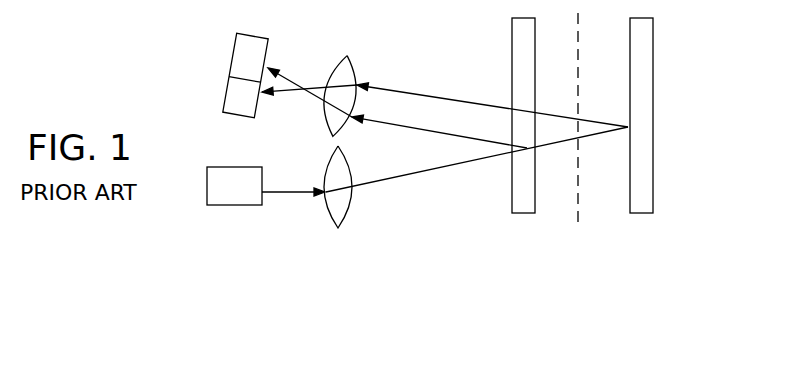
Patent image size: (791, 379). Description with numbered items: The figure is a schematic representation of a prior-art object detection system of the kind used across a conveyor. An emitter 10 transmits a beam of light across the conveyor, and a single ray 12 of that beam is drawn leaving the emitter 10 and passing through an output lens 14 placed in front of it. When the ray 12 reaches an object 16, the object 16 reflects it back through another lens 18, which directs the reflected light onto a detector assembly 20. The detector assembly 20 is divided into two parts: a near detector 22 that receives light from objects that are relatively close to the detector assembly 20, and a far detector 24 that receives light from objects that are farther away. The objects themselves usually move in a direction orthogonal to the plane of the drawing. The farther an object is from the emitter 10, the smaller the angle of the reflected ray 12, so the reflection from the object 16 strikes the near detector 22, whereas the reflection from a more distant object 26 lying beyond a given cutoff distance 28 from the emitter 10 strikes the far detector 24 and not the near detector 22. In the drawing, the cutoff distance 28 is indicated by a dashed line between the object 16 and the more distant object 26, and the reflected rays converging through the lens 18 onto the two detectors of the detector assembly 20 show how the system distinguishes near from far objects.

The emitter 10 is at (248, 205).
The ray 12 is at (380, 178).
The output lens 14 is at (338, 218).
The object 16 is at (523, 215).
The lens 18 is at (347, 55).
The detector assembly 20 is at (278, 42).
The near detector 22 is at (233, 58).
The far detector 24 is at (230, 107).
The distant object 26 is at (640, 205).
The cutoff distance 28 is at (578, 195).